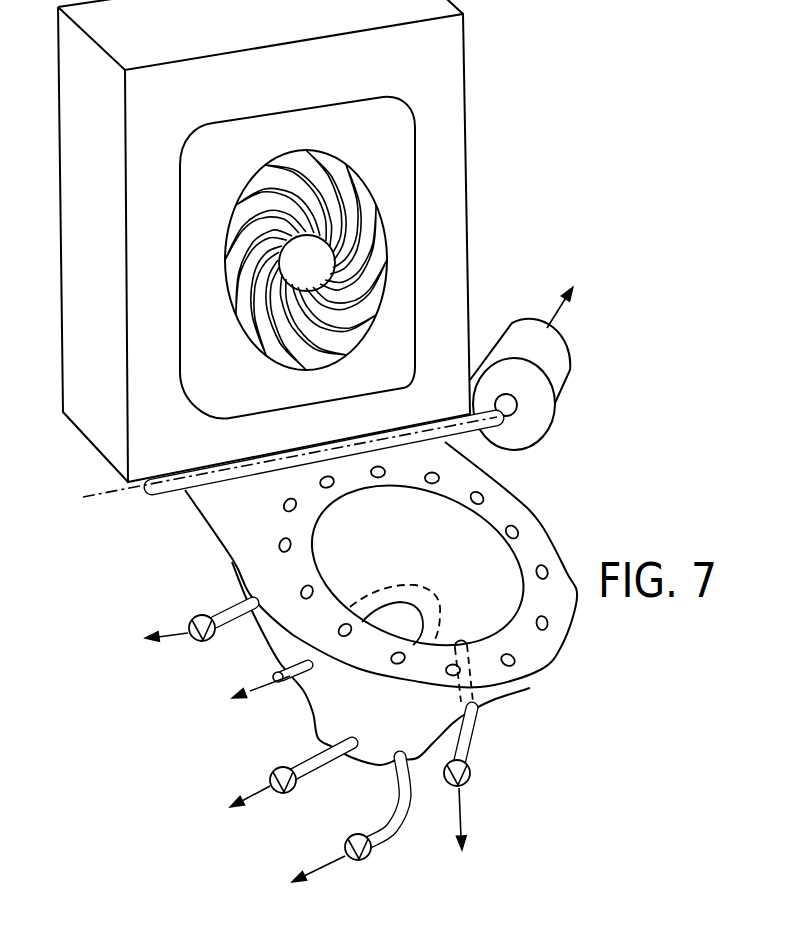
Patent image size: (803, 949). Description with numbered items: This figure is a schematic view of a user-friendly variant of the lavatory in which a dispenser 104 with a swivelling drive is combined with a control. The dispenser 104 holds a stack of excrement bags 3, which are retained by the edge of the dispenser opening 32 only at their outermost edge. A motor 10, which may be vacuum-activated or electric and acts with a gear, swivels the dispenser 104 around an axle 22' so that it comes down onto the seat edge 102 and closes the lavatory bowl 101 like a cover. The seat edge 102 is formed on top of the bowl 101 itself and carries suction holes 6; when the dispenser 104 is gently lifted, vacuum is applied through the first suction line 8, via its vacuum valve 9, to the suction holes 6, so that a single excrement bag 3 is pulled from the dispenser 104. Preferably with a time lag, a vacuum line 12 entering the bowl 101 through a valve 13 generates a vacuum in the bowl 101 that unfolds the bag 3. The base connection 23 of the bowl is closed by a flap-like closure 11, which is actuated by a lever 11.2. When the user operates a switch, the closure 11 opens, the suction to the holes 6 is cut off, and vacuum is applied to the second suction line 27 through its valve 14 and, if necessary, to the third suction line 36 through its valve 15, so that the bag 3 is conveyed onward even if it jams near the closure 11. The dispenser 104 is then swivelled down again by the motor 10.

The dispenser 104 is at (482, 95).
The dispenser opening 32 is at (418, 82).
The excrement bag 3 is at (404, 272).
The motor 10 is at (540, 359).
The axle 22' is at (261, 457).
The seat edge 102 is at (506, 495).
The lavatory bowl 101 is at (538, 696).
The suction holes 6 is at (546, 568).
The closure 11 is at (413, 618).
The base connection 23 is at (336, 727).
The first suction line 8 is at (232, 604).
The vacuum valve 9 is at (200, 642).
The lever 11.2 is at (298, 672).
The second suction line 27 is at (333, 765).
The valve 14 is at (280, 798).
The third suction line 36 is at (404, 815).
The valve 15 is at (358, 862).
The vacuum line 12 is at (472, 748).
The valve 13 is at (470, 784).